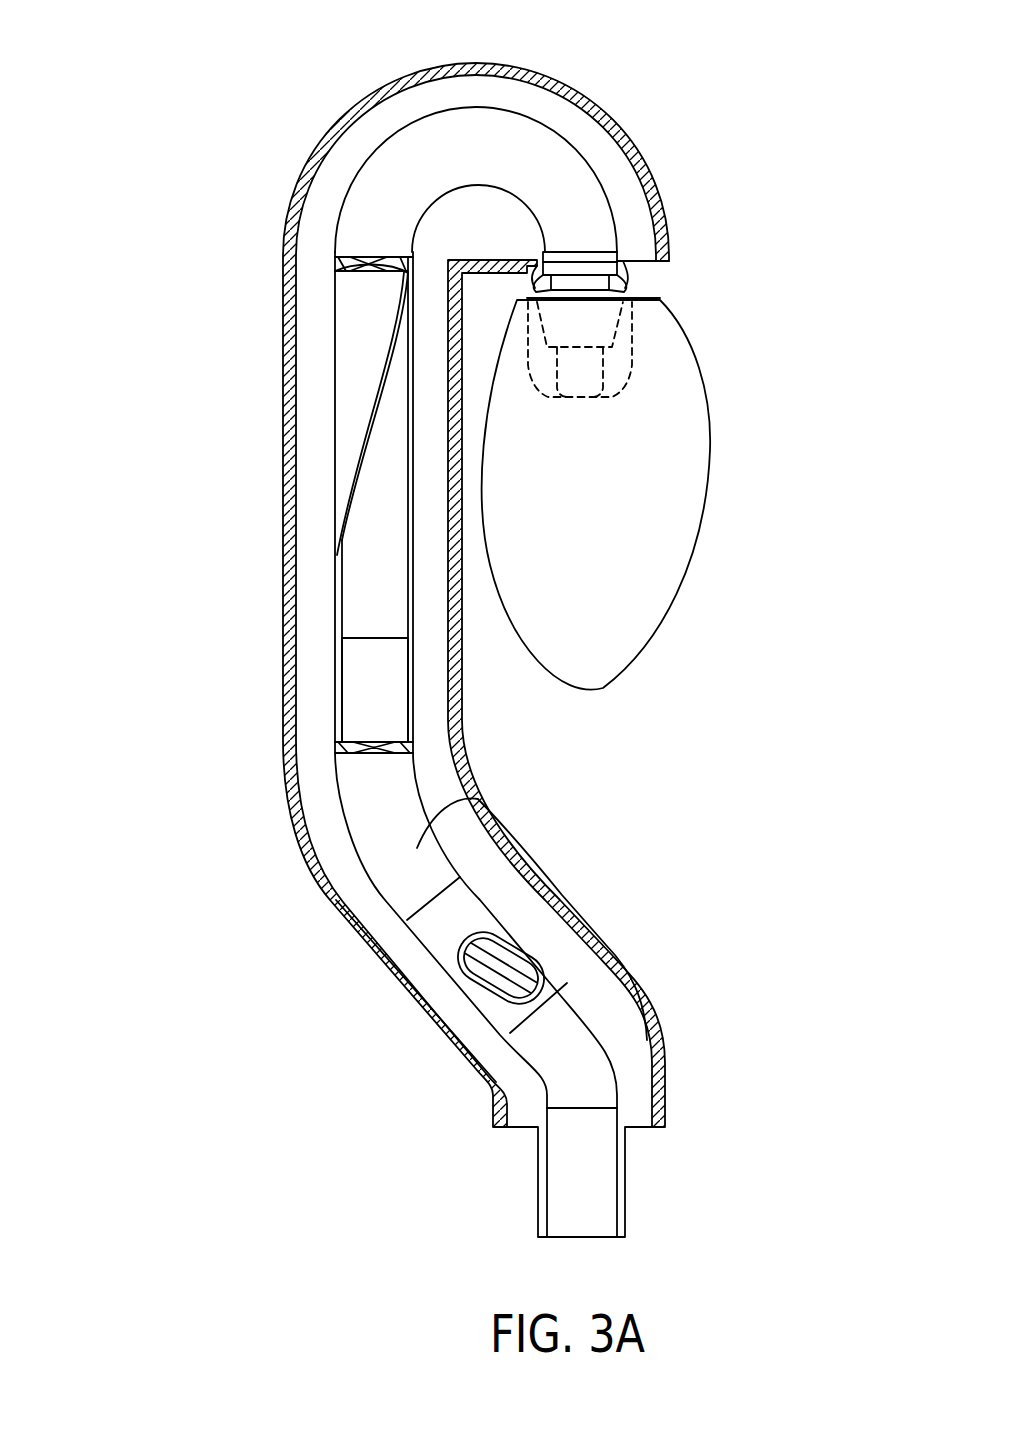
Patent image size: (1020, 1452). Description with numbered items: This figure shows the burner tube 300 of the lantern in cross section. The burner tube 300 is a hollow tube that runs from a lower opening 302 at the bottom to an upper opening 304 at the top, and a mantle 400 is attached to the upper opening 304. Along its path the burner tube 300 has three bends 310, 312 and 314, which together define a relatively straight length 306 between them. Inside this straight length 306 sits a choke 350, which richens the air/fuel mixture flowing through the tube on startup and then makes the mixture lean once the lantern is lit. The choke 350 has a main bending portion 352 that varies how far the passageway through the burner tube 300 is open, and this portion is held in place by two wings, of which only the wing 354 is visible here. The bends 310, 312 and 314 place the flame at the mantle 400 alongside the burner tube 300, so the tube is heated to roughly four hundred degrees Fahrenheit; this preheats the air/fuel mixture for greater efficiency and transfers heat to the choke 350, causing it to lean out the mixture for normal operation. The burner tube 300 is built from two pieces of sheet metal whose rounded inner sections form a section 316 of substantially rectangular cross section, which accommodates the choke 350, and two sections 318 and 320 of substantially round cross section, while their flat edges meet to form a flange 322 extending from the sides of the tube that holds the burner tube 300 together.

The burner tube 300 is at (150, 434).
The lower opening 302 is at (605, 1235).
The upper opening 304 is at (603, 325).
The relatively straight length 306 is at (273, 383).
The bend 310 is at (655, 1003).
The bend 312 is at (273, 810).
The bend 314 is at (572, 58).
The section with substantially rectangular cross section 316 is at (370, 620).
The section with substantially round cross section 318 is at (543, 158).
The section with substantially round cross section 320 is at (470, 793).
The flange 322 is at (333, 172).
The choke 350 is at (350, 320).
The main bending portion 352 is at (362, 374).
The wing 354 is at (358, 712).
The mantle 400 is at (700, 543).